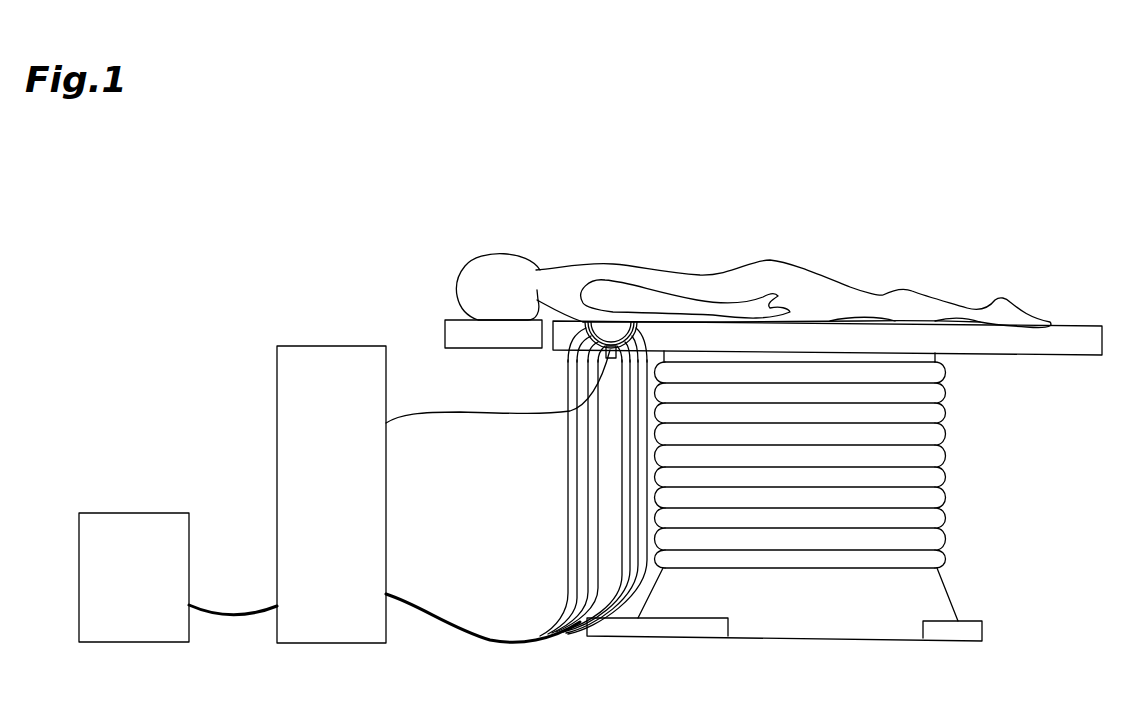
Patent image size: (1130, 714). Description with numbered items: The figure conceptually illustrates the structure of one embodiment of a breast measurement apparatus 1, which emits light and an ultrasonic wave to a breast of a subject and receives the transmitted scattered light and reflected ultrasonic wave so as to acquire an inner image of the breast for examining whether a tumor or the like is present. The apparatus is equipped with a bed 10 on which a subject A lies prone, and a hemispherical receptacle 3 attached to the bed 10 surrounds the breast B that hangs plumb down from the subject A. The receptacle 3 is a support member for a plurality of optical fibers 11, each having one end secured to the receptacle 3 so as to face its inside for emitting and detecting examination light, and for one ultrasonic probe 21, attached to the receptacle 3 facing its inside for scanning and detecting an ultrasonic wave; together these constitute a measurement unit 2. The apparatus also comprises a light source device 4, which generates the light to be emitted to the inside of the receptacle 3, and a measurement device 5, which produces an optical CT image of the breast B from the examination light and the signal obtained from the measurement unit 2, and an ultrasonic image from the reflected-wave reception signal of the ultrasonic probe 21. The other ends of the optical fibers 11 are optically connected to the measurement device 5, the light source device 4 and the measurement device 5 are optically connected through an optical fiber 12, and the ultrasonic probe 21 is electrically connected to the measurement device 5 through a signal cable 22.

The breast measurement apparatus 1 is at (238, 203).
The subject A is at (750, 214).
The breast B is at (609, 330).
The measurement unit 2 is at (648, 331).
The ultrasonic probe 21 is at (616, 340).
The signal cable 22 is at (434, 412).
The receptacle 3 is at (572, 342).
The light source device 4 is at (131, 513).
The measurement device 5 is at (333, 346).
The bed 10 is at (970, 430).
The optical fibers 11 is at (560, 442).
The optical fiber 12 is at (232, 620).